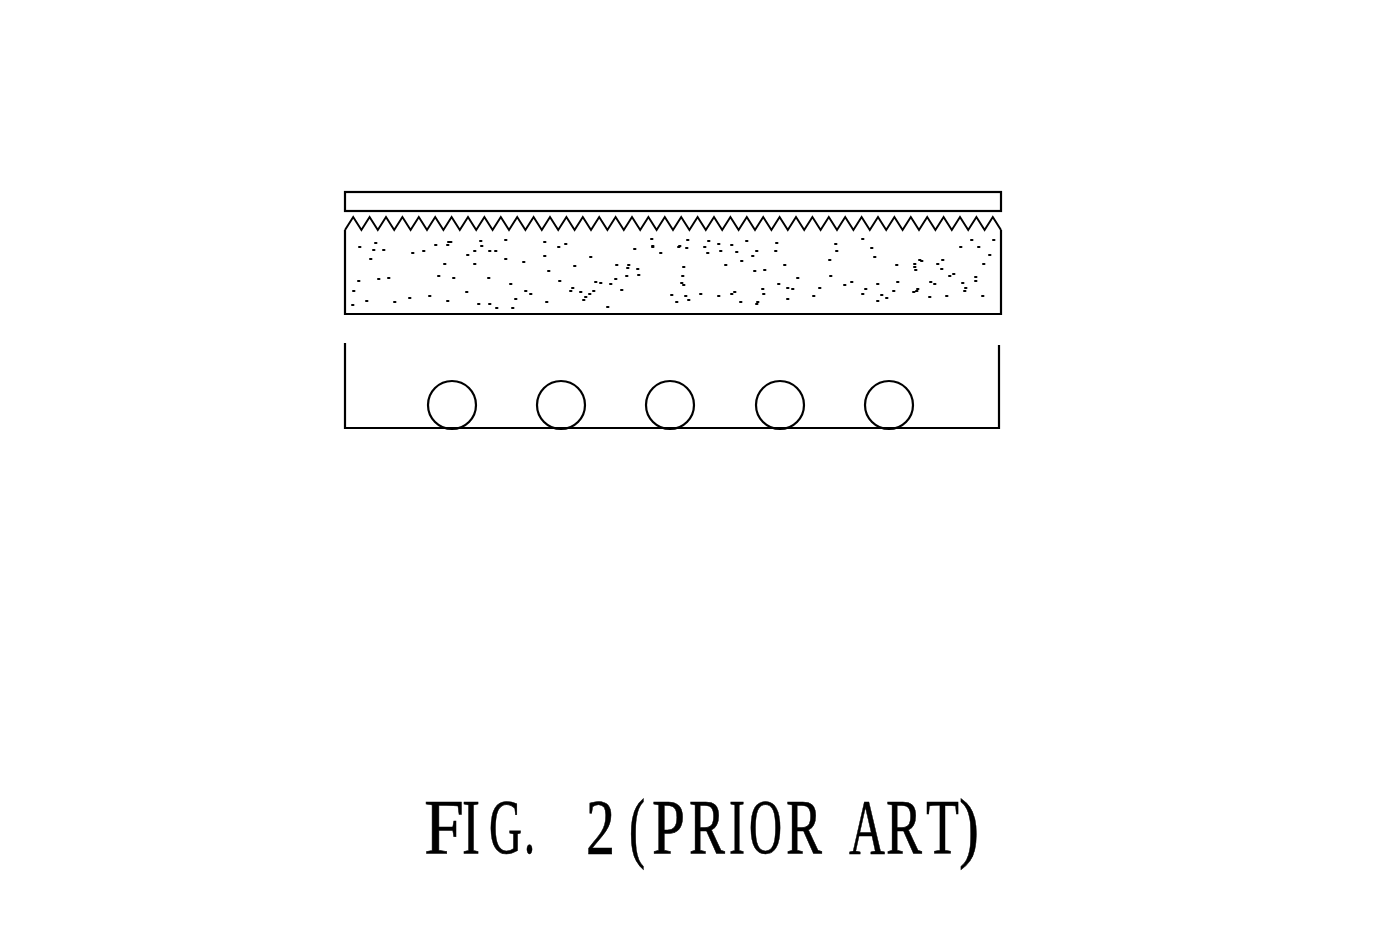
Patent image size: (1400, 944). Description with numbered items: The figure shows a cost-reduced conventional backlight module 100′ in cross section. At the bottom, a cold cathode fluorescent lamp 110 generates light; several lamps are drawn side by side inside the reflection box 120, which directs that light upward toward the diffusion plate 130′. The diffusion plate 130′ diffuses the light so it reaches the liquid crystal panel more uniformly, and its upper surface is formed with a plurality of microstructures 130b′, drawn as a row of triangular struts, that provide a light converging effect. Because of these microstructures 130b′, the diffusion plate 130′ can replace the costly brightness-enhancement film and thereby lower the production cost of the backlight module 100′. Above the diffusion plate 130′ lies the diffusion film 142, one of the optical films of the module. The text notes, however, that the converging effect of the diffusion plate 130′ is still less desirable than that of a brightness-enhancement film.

The backlight module 100′ is at (1374, 576).
The cold cathode fluorescent lamp (CCFL) 110 is at (780, 405).
The reflection box 120 is at (999, 390).
The diffusion plate 130′ is at (962, 278).
The microstructures 130b′ is at (350, 223).
The diffusion film 142 is at (983, 204).